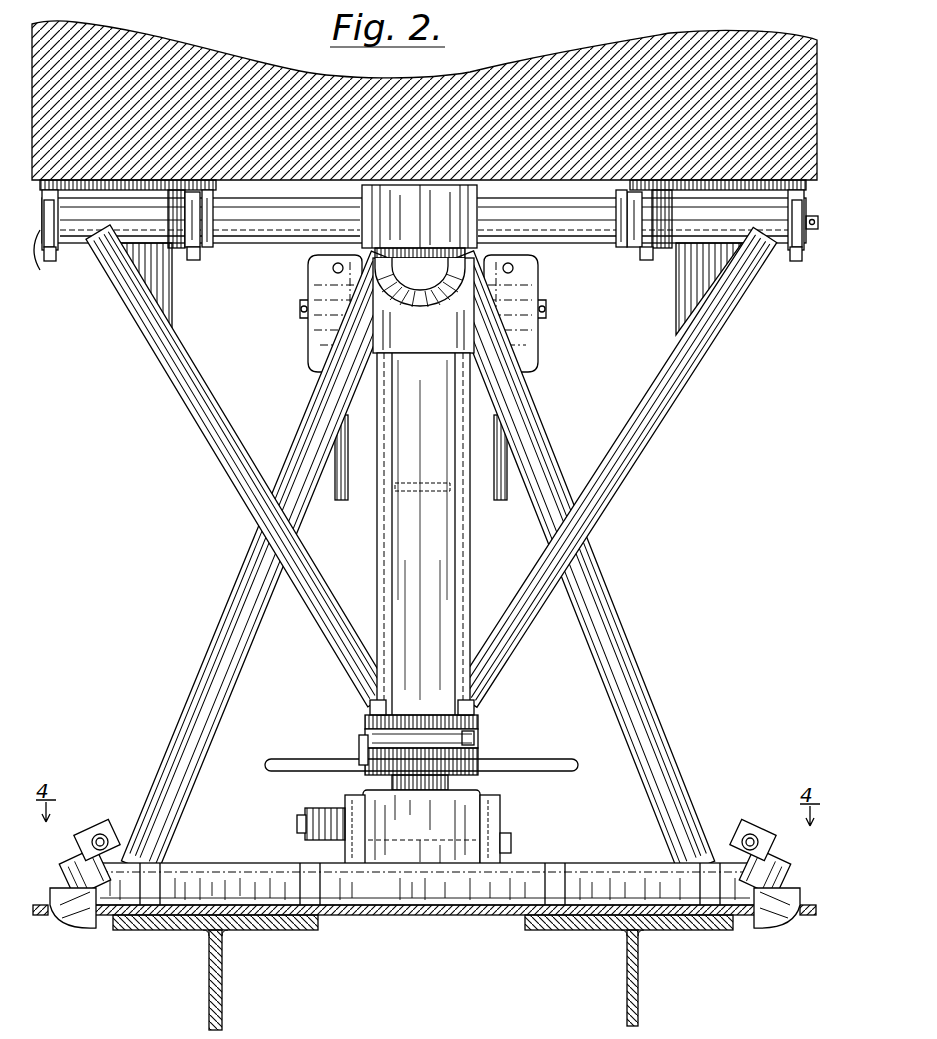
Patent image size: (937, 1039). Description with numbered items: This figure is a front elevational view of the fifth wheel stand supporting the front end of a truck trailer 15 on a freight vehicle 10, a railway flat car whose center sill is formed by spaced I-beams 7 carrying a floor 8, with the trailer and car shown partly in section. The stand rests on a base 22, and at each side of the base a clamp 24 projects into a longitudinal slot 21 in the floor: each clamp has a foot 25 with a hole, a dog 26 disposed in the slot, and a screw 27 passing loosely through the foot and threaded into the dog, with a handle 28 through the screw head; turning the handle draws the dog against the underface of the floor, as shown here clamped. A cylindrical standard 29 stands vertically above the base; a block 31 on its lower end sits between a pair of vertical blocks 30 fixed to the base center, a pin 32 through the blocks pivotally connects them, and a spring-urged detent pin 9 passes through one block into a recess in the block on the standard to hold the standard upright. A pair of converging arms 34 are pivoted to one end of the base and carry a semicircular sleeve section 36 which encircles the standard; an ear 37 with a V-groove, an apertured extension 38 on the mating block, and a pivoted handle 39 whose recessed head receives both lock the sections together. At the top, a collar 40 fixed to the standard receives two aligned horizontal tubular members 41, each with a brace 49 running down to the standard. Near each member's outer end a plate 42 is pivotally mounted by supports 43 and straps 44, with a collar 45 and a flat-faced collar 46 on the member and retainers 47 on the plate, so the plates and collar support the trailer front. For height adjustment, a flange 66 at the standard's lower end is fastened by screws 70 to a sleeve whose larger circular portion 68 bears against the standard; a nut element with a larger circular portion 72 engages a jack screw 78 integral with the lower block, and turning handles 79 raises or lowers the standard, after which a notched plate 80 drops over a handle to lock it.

The truck trailer 15 is at (617, 46).
The collar 40 is at (477, 193).
The tubular member 41 is at (270, 243).
The plate 42 is at (128, 185).
The support 43 is at (170, 214).
The strap 44 is at (70, 300).
The collar 45 is at (176, 190).
The collar 46 is at (205, 216).
The retainer 47 is at (205, 192).
The ear 37 is at (372, 252).
The apertured extension 38 is at (300, 309).
The semicircular sleeve section 36 is at (418, 345).
The handle 39 is at (341, 500).
The brace 49 is at (208, 460).
The arm 34 is at (212, 650).
The cylindrical standard 29 is at (380, 548).
The jack screw 78 is at (452, 578).
The screw 70 is at (370, 708).
The flange 66 is at (478, 720).
The larger circular portion of sleeve 68 is at (480, 738).
The larger circular portion of nut element 72 is at (478, 752).
The plate 80 is at (359, 750).
The handle 79 is at (284, 760).
The vertical block 30 is at (355, 796).
The block 31 is at (480, 792).
The detent pin 9 is at (298, 812).
The pin 32 is at (511, 842).
The base 22 is at (572, 880).
The clamp 24 is at (88, 820).
The screw 27 is at (98, 832).
The handle 28 is at (104, 836).
The foot 25 is at (68, 852).
The dog 26 is at (70, 920).
The slot 21 is at (58, 924).
The floor 8 is at (356, 916).
The freight vehicle 10 is at (440, 966).
The I-beam 7 is at (222, 972).